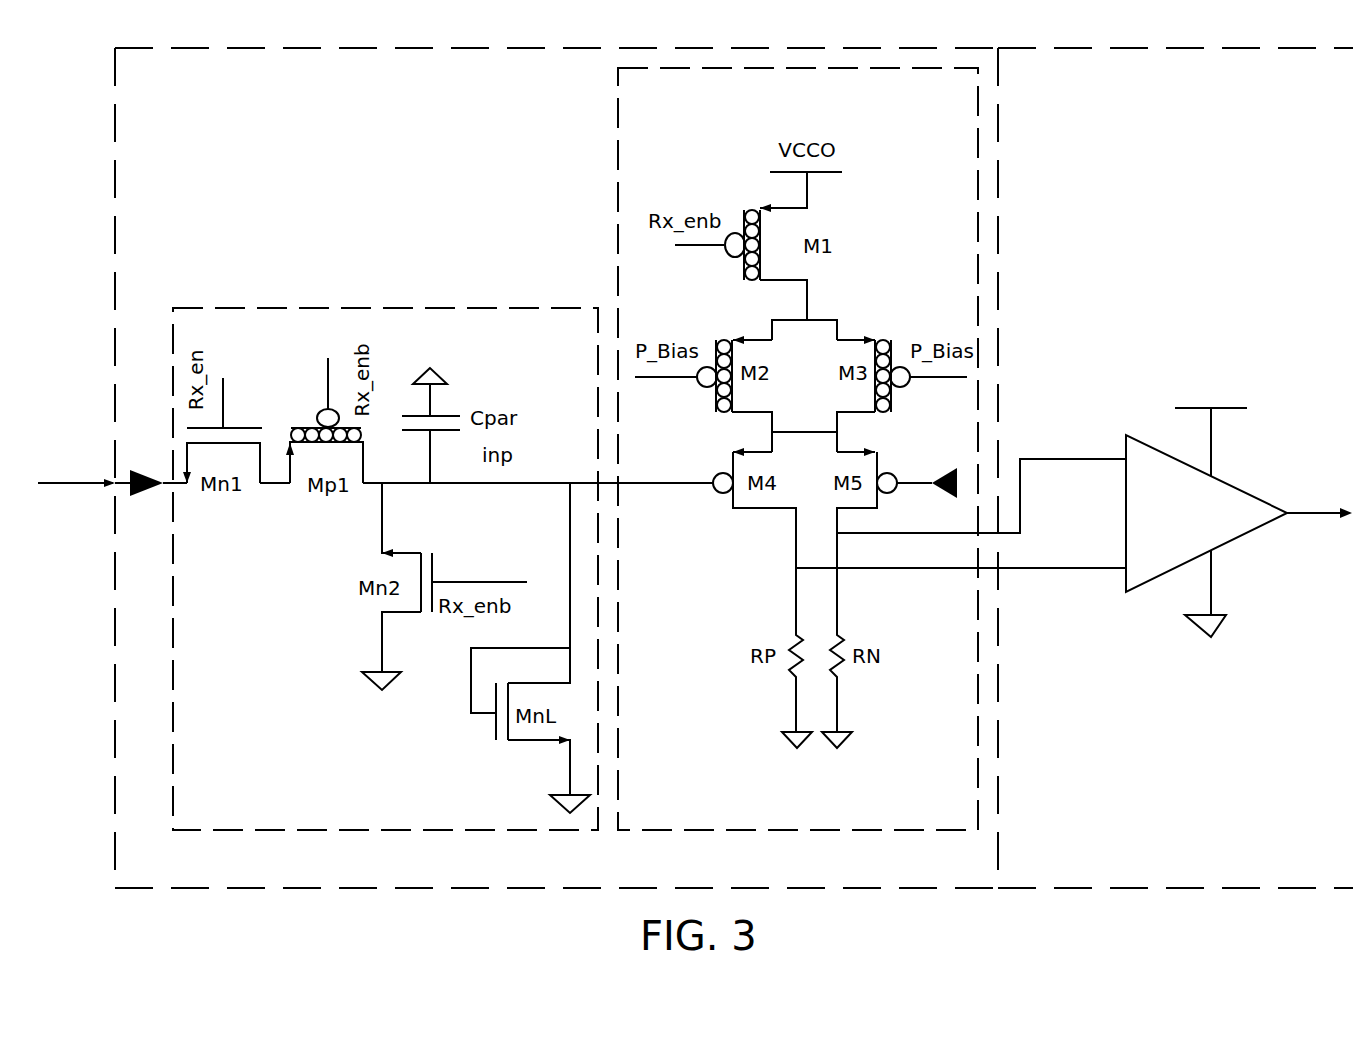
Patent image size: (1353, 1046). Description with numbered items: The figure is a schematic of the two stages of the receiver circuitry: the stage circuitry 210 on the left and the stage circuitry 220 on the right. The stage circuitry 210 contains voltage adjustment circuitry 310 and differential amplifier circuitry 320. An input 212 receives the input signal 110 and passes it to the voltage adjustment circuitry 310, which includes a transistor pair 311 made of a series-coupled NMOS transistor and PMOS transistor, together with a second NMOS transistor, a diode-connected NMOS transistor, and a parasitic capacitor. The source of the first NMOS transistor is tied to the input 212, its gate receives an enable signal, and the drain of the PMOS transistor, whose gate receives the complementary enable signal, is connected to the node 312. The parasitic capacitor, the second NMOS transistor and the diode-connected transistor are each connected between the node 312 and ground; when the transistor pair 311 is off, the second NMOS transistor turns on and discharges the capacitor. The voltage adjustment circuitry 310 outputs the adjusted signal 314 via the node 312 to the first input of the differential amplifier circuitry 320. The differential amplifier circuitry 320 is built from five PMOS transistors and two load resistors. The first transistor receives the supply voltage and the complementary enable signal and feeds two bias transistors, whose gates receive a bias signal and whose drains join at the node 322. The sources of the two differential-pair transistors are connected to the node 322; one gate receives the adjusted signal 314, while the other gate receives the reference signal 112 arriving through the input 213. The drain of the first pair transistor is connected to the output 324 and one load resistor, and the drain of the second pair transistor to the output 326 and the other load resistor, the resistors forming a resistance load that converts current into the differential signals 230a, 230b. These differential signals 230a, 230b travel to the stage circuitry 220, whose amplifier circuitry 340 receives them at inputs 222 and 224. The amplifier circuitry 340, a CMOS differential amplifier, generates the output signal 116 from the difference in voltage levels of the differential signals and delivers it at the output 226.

The input signal 110 is at (70, 483).
The reference signal 112 is at (912, 487).
The output signal 116 is at (1316, 510).
The stage circuitry 210 is at (184, 96).
The input 212 is at (147, 467).
The input 213 is at (936, 470).
The stage circuitry 220 is at (1337, 97).
The input 222 is at (1122, 456).
The input 224 is at (1122, 566).
The comparator output 226 is at (1290, 516).
The differential signal 230a is at (1045, 455).
The differential signal 230b is at (1062, 572).
The voltage adjustment circuitry 310 is at (371, 307).
The transistor pair 311 is at (275, 485).
The node 312 is at (477, 485).
The adjusted signal 314 is at (683, 482).
The differential amplifier circuitry 320 is at (824, 106).
The node 322 is at (803, 431).
The output 324 is at (792, 551).
The output 326 is at (840, 535).
The amplifier circuitry 340 is at (1199, 530).